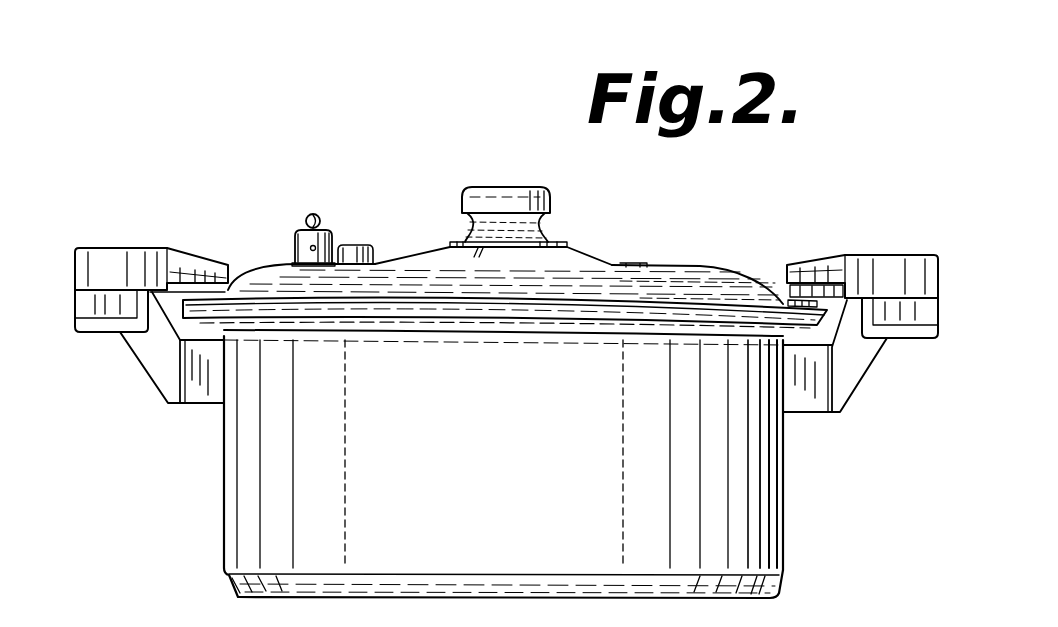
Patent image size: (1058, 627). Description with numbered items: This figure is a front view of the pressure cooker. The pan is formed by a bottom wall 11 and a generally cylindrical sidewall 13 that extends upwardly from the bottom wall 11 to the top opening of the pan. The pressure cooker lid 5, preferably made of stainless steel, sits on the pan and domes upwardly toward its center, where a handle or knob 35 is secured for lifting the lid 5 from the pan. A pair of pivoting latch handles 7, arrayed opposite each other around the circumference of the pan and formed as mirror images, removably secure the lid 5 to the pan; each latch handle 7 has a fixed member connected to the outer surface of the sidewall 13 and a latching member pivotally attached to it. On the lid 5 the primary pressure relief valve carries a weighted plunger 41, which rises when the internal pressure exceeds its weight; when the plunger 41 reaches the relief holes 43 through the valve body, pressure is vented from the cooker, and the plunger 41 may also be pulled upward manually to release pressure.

The pressure cooker lid 5 is at (703, 265).
The pivoting latch handles 7 is at (143, 363).
The bottom wall 11 is at (737, 601).
The sidewall 13 is at (783, 463).
The knob 35 is at (546, 194).
The weighted plunger 41 is at (318, 214).
The relief holes 43 is at (310, 248).